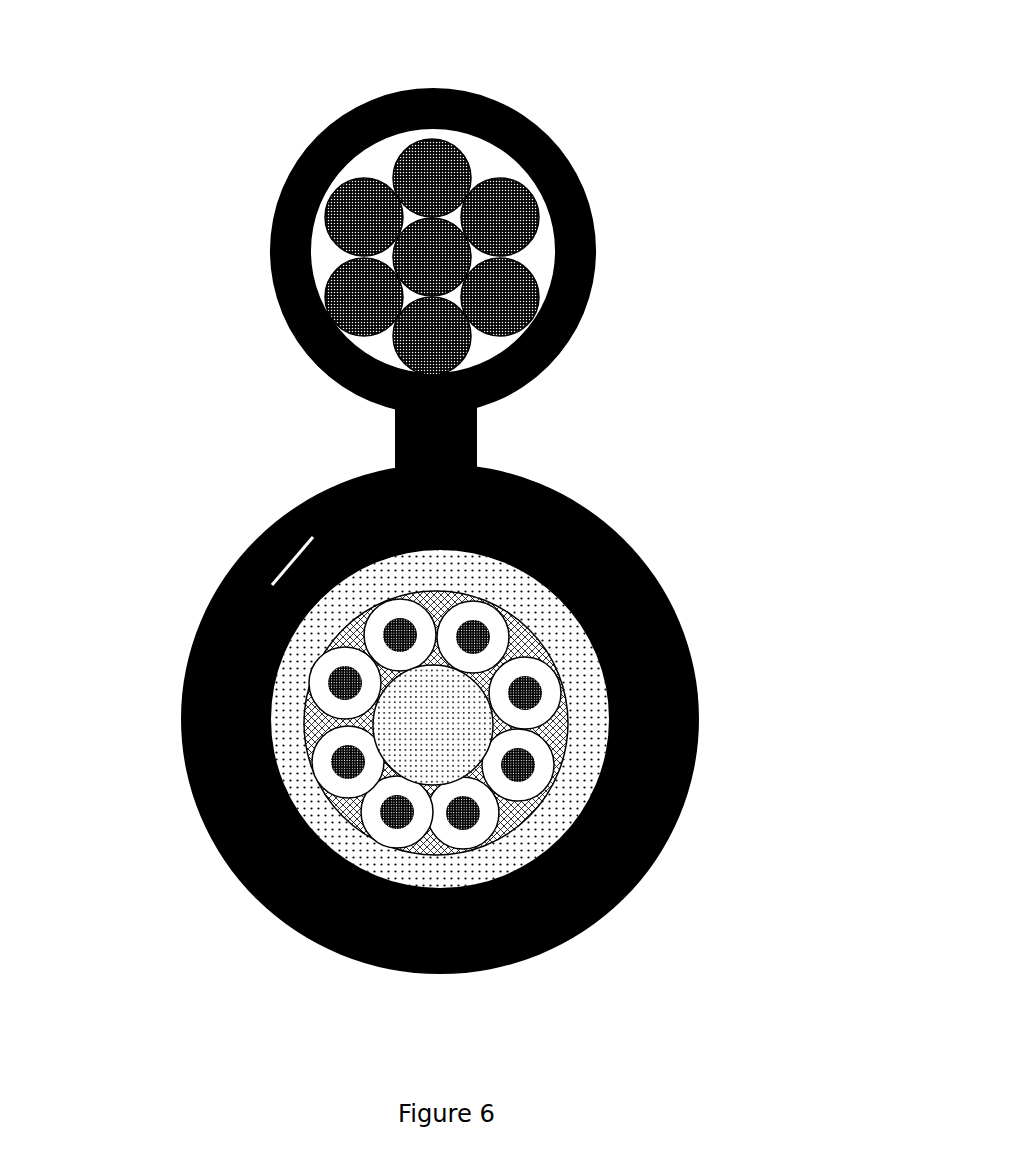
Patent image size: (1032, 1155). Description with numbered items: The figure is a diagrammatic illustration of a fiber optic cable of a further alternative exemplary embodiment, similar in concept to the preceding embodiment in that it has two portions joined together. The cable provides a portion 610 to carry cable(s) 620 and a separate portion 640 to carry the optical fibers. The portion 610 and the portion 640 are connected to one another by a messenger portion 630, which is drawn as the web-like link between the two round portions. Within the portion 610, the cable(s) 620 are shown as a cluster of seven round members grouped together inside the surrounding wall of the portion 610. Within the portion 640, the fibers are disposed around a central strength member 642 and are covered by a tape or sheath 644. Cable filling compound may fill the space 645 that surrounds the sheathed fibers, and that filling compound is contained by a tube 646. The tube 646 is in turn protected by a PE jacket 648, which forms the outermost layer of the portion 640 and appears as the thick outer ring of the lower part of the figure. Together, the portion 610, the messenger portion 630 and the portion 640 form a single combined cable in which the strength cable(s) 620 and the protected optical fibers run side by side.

The portion 610 is at (485, 209).
The cable(s) 620 is at (529, 257).
The messenger portion 630 is at (530, 436).
The portion 640 is at (474, 703).
The strength member 642 is at (512, 608).
The tape or sheath 644 is at (499, 658).
The space 645 is at (563, 665).
The tube 646 is at (554, 719).
The PE jacket 648 is at (546, 719).